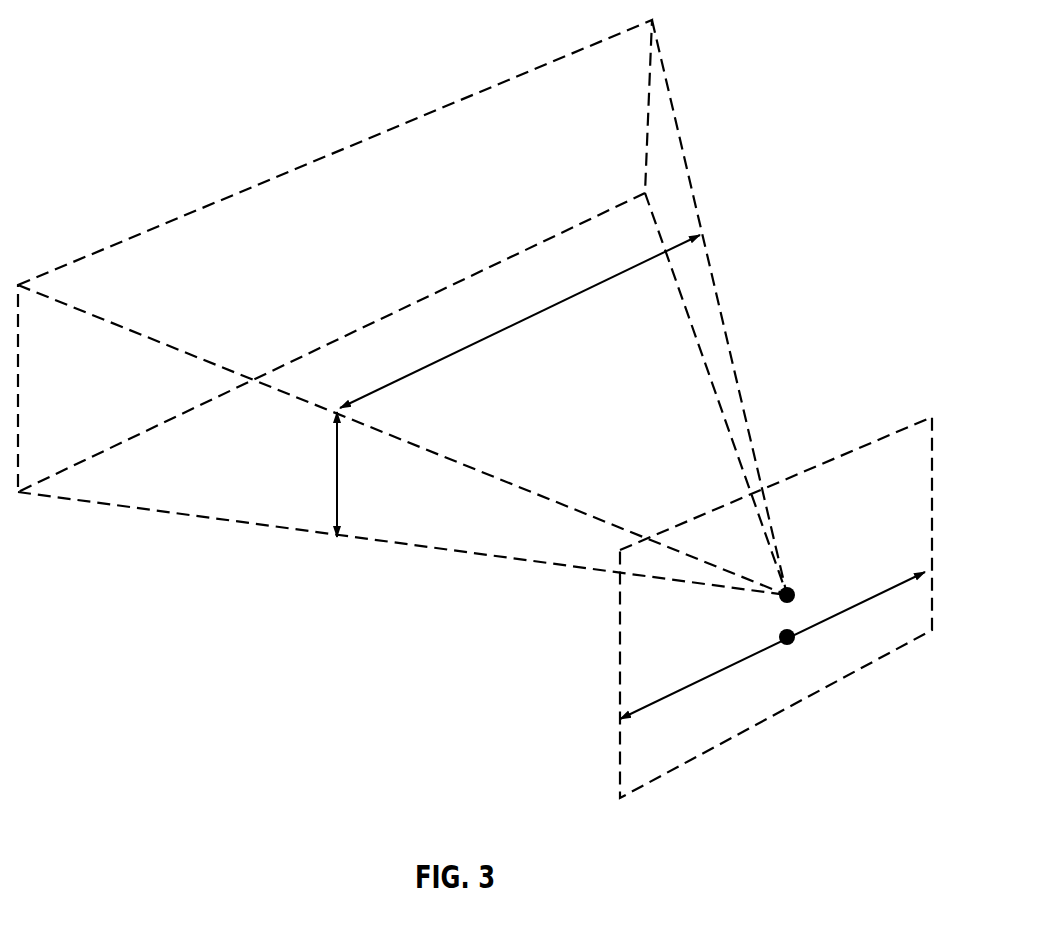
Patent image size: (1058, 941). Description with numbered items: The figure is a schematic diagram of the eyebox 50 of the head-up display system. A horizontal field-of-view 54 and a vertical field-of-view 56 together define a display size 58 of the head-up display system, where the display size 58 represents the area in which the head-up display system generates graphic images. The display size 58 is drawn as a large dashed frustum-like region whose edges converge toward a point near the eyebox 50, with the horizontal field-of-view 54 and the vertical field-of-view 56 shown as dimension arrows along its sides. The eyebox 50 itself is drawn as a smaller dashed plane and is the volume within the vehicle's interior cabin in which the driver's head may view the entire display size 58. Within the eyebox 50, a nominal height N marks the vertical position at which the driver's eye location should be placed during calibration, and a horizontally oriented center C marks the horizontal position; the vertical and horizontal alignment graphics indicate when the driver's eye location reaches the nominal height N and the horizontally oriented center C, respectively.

The display size 58 is at (455, 101).
The eyebox 50 is at (882, 437).
The horizontal field-of-view 54 is at (537, 313).
The vertical field-of-view 56 is at (333, 470).
The horizontally oriented center C is at (796, 640).
The nominal height N is at (670, 772).